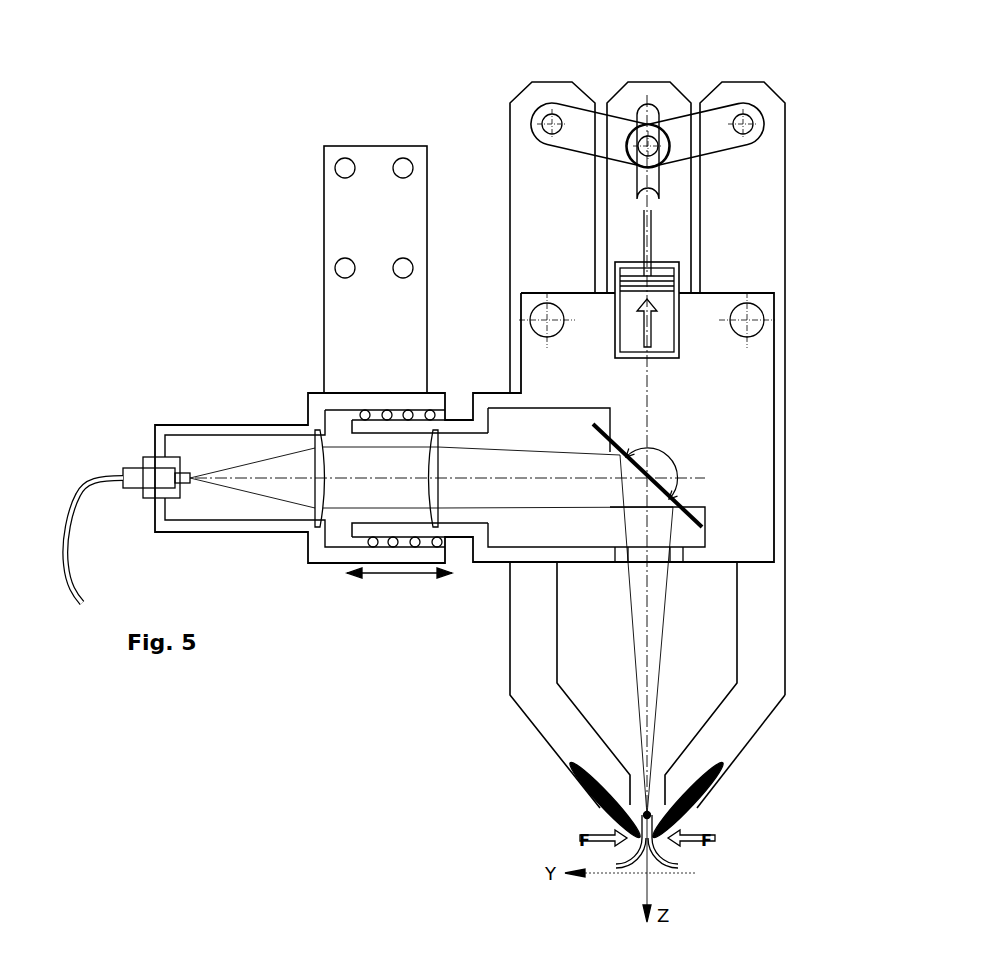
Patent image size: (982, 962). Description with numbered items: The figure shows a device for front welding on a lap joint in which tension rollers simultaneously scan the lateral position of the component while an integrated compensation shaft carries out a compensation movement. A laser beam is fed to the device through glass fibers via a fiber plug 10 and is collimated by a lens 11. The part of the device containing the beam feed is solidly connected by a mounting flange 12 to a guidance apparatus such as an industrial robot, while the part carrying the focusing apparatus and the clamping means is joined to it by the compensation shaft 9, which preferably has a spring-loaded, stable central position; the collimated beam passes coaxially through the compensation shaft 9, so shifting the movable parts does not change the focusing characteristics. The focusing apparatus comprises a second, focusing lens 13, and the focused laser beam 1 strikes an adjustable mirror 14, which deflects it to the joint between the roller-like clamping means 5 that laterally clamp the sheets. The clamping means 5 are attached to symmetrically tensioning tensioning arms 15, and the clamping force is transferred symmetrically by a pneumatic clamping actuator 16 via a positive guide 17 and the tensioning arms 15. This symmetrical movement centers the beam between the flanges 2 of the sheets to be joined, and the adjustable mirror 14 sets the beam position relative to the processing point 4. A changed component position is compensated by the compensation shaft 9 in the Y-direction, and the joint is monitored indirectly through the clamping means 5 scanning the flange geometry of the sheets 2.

The focused laser beam 1 is at (296, 452).
The flanges of the sheets 2 is at (625, 868).
The processing point 4 is at (647, 815).
The roller-like clamping means 5 is at (608, 807).
The compensation shaft 9 is at (392, 545).
The fiber plug 10 is at (138, 480).
The lens 11 is at (313, 498).
The mounting flange 12 is at (332, 235).
The focusing lens 13 is at (436, 517).
The adjustable mirror 14 is at (657, 482).
The tensioning arms 15 is at (532, 703).
The pneumatic clamping actuator 16 is at (653, 322).
The positive guide 17 is at (655, 122).